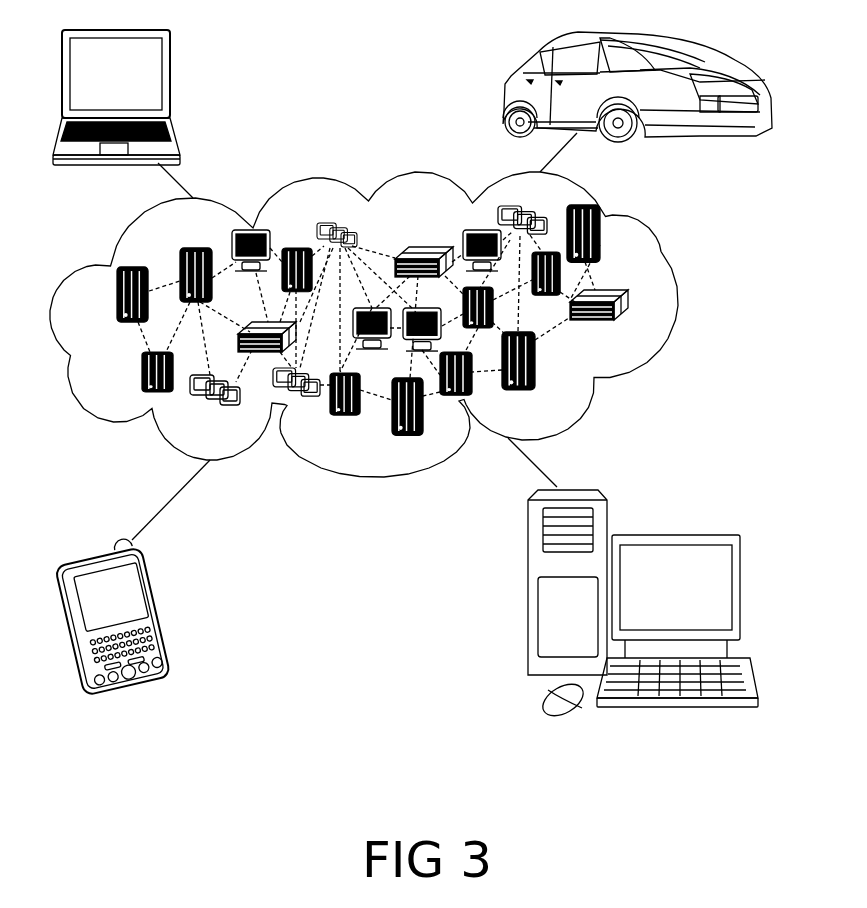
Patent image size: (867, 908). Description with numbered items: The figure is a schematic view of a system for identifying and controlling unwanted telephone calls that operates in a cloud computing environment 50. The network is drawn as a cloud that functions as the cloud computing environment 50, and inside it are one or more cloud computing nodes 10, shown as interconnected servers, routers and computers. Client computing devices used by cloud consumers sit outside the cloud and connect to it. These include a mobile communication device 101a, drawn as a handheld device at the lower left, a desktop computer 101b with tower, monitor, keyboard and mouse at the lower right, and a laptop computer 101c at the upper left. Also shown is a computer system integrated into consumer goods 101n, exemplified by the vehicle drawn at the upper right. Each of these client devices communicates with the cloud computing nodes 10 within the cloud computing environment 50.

The cloud computing node 10 is at (640, 330).
The cloud computing environment 50 is at (676, 304).
The mobile communication device 101a is at (162, 612).
The desktop computer 101b is at (673, 535).
The laptop computer 101c is at (172, 80).
The computer system integrated into consumer goods 101n is at (510, 94).